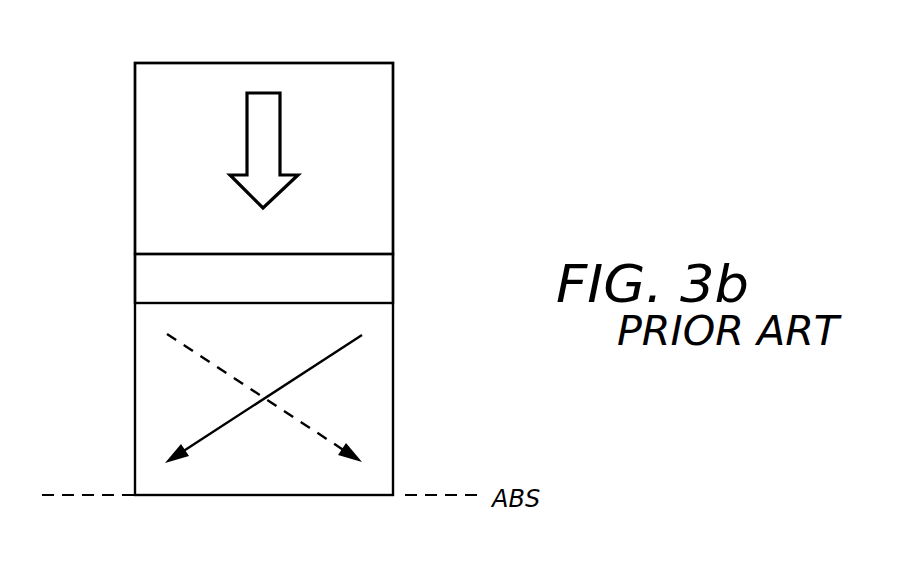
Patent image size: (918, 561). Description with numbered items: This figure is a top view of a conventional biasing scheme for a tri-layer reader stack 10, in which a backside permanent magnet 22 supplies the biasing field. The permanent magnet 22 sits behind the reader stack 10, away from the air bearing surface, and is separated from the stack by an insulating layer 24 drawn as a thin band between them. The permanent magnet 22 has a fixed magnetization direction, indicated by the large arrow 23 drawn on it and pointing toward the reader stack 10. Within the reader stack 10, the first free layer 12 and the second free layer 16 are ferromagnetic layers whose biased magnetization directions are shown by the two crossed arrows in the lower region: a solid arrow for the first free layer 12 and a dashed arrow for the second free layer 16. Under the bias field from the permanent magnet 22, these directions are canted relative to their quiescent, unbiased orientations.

The tri-layer reader stack 10 is at (120, 476).
The backside permanent magnet 22 is at (358, 126).
The arrow denoting fixed magnetization direction 23 is at (232, 143).
The insulating layer 24 is at (277, 291).
The second free layer 16 is at (222, 370).
The first free layer 12 is at (295, 379).